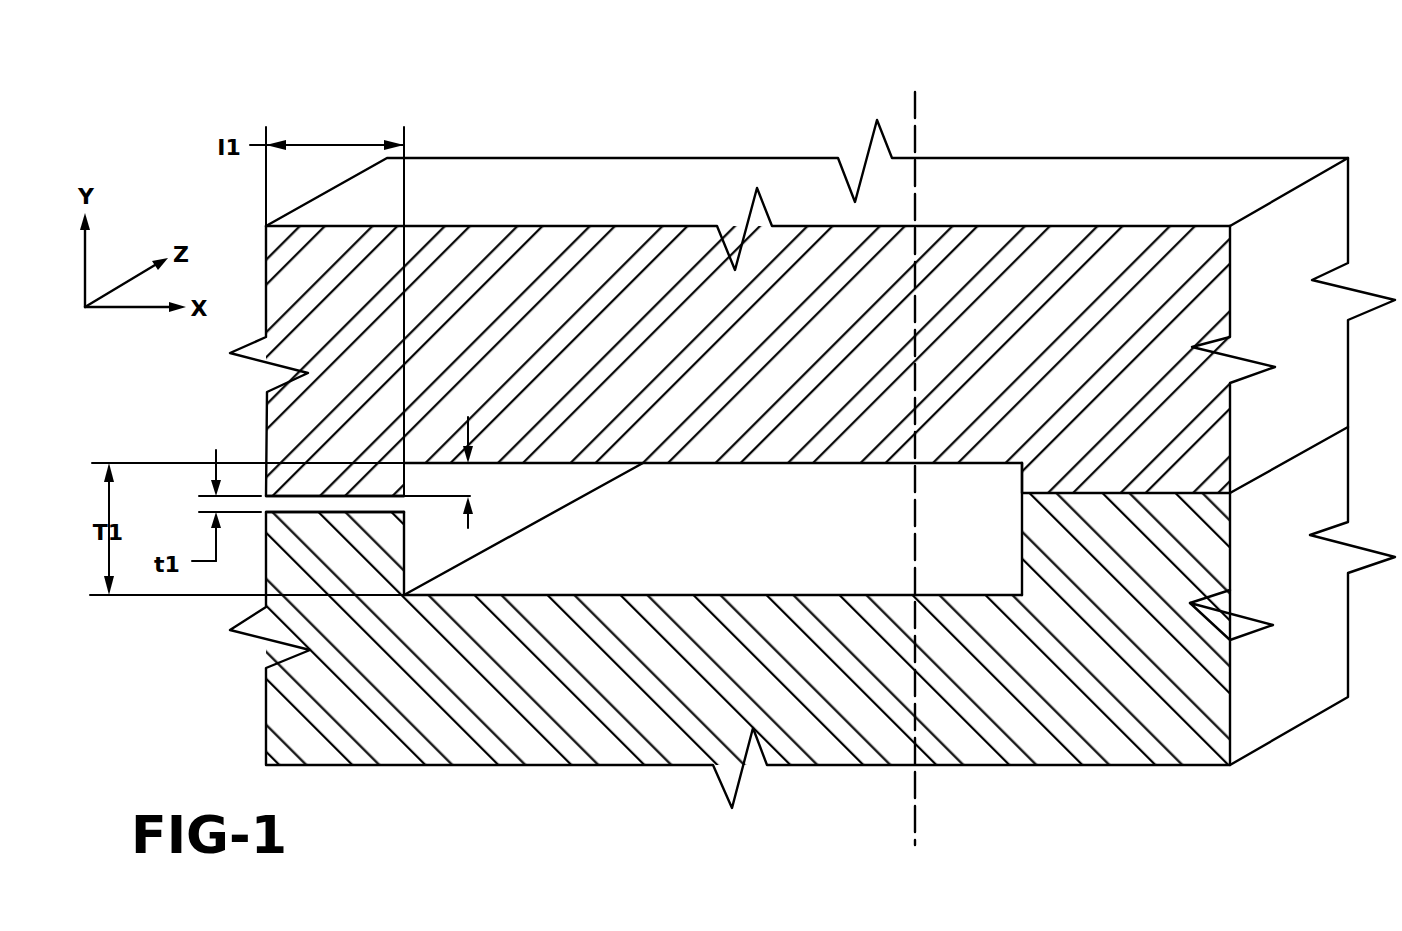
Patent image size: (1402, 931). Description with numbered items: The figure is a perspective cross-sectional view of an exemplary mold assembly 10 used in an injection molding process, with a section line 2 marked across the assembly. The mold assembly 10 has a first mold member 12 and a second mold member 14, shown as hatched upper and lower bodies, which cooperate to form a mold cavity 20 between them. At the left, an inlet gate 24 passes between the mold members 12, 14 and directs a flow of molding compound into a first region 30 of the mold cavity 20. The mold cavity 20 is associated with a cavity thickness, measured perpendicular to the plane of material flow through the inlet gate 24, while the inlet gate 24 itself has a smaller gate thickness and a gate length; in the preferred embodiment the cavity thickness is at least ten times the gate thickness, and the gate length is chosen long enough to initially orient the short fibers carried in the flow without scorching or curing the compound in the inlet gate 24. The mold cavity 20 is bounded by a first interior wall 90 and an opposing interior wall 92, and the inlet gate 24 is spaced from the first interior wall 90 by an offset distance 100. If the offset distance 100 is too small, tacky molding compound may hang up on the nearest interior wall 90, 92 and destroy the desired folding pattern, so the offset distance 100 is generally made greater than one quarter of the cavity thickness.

The section line 2- 2 is at (915, 92).
The mold assembly 10 is at (248, 100).
The first mold member 12 is at (1183, 252).
The second mold member 14 is at (1213, 688).
The mold cavity 20 is at (976, 568).
The inlet gate 24 is at (356, 503).
The first region of the mold cavity 30 is at (528, 570).
The first interior wall 90 is at (705, 463).
The interior wall 92 is at (707, 594).
The offset distance 100 is at (470, 477).